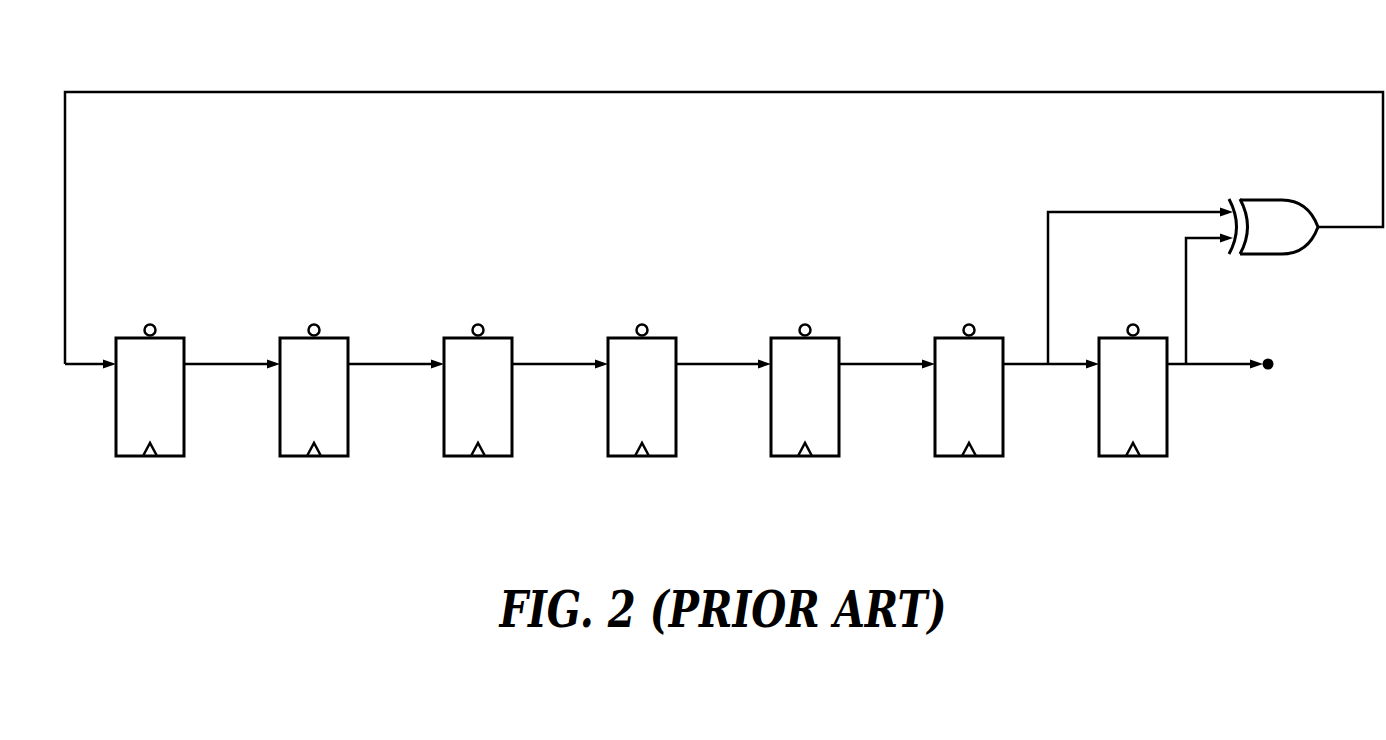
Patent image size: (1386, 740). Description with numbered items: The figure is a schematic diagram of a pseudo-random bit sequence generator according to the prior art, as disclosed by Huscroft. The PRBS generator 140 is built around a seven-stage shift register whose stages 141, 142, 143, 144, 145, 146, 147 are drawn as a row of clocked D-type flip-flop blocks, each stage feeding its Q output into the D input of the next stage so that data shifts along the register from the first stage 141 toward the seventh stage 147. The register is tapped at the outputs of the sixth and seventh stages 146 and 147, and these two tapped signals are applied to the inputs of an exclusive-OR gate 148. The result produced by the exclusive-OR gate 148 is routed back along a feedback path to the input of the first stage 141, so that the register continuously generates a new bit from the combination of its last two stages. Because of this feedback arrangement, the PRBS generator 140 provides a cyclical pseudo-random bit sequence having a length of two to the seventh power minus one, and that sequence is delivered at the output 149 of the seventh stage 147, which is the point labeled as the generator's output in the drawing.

The PRBS generator 140 is at (720, 72).
The shift register first stage 141 is at (130, 446).
The shift register second stage 142 is at (294, 446).
The shift register third stage 143 is at (458, 446).
The shift register fourth stage 144 is at (622, 446).
The shift register fifth stage 145 is at (785, 446).
The shift register sixth stage 146 is at (949, 446).
The shift register seventh stage 147 is at (1113, 446).
The exclusive-OR gate 148 is at (1275, 205).
The output 149 is at (1267, 372).